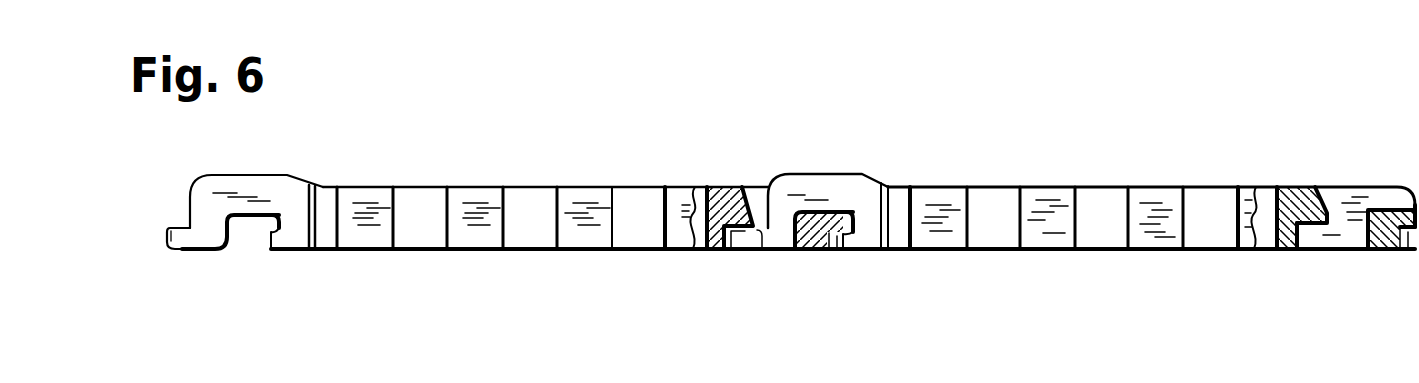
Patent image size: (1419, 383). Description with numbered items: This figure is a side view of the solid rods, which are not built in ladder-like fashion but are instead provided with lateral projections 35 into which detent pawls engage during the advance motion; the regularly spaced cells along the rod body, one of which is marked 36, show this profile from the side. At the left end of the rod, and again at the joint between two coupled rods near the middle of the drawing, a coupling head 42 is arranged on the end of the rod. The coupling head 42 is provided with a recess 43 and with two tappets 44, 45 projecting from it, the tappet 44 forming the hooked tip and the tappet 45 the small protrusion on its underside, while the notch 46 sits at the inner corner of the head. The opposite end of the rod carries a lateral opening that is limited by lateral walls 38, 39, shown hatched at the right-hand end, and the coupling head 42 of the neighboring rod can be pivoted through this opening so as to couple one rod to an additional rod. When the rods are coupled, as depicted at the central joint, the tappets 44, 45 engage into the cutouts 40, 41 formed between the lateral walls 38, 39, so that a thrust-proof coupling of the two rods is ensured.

The lateral projection 35 is at (1210, 205).
The panel core cell 36 is at (1157, 203).
The lateral wall 38 is at (1332, 203).
The lateral wall 39 is at (1367, 212).
The cutout 40 is at (730, 250).
The cutout 41 is at (833, 248).
The coupling head 42 is at (252, 193).
The recess 43 is at (249, 232).
The tappet 44 is at (182, 238).
The tappet 45 is at (283, 250).
The notch 46 is at (276, 215).